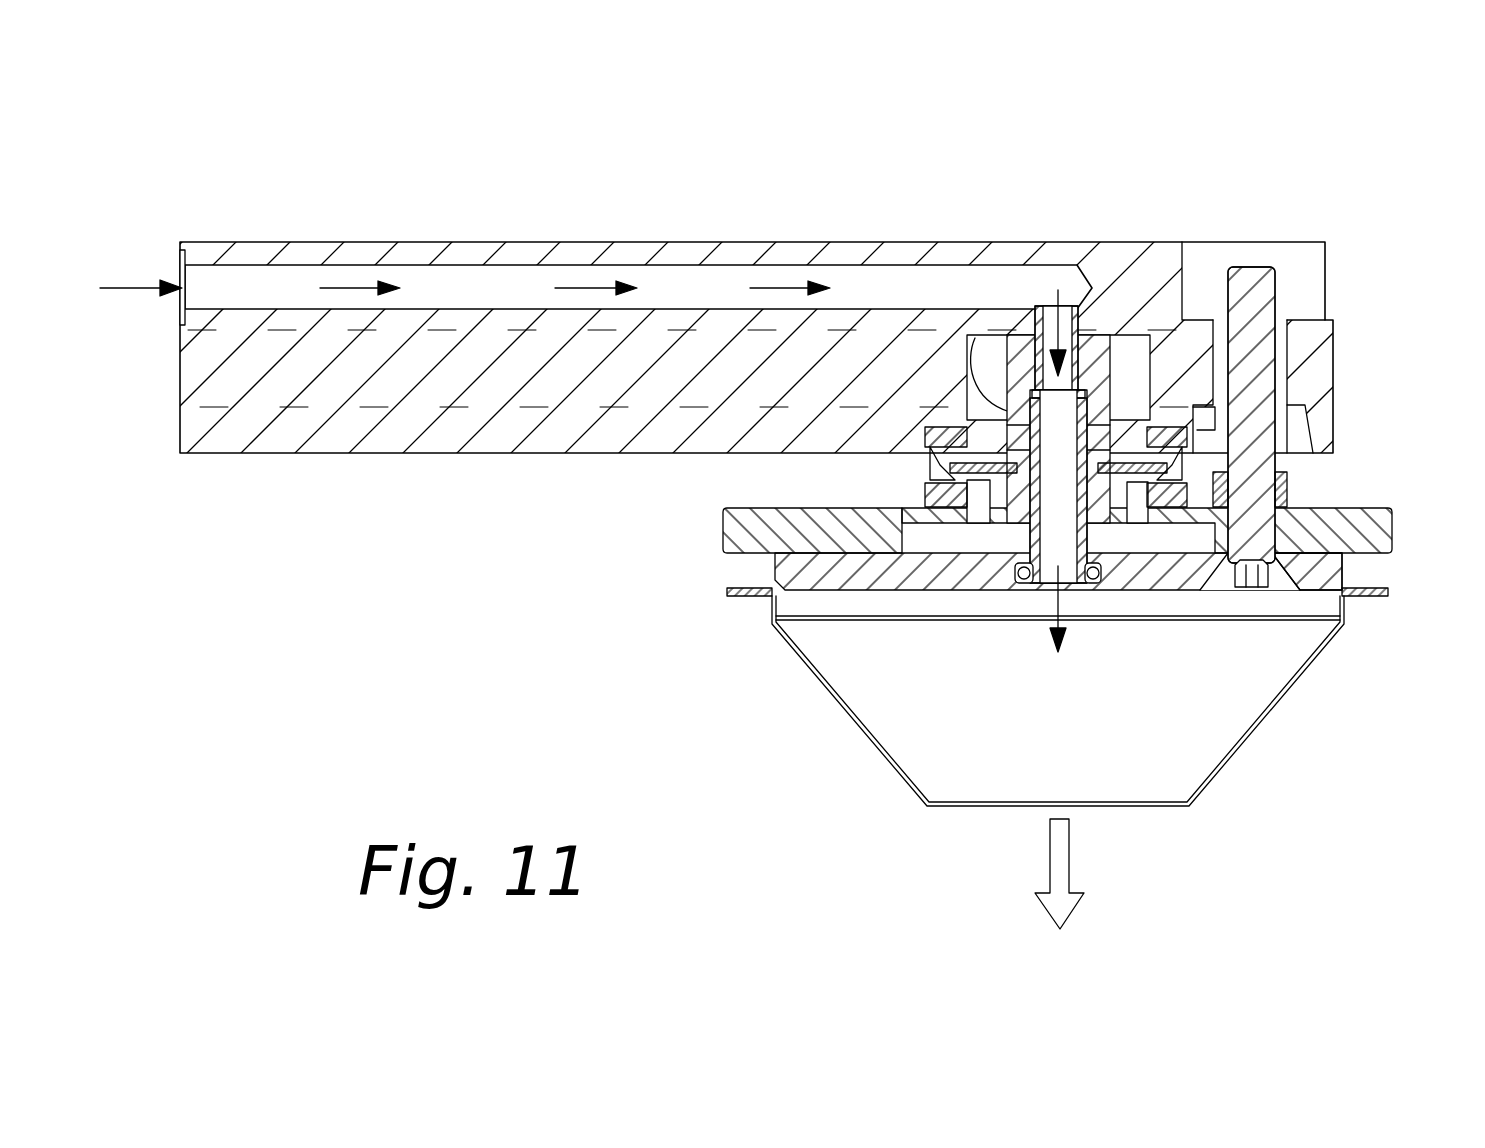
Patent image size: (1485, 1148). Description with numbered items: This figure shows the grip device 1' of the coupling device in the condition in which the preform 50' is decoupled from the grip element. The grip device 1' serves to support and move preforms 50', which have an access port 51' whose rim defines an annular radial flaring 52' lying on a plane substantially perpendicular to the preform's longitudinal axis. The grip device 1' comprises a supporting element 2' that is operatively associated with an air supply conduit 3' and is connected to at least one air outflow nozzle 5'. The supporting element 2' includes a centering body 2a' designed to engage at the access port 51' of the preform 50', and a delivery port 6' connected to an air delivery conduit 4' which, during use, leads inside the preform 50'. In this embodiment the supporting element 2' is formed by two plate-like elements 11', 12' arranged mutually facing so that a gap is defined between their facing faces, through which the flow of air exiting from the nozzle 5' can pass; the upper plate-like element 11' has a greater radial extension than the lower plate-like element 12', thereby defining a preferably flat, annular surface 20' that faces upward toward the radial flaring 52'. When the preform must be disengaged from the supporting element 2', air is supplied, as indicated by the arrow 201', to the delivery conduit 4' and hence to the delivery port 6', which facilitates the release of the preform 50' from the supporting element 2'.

The grip device 1' is at (1070, 120).
The arrow 201' is at (614, 543).
The air delivery conduit 4' is at (768, 344).
The air supply conduit 3' is at (742, 455).
The supporting element 2' is at (1015, 445).
The plate-like element 11' is at (766, 514).
The air outflow nozzle 5' is at (1166, 507).
The annular radial flaring 52' is at (1077, 618).
The surface 20' is at (1325, 463).
The plate-like element 12' is at (1329, 630).
The delivery port 6' is at (1074, 539).
The centering body 2a' is at (1058, 631).
The preform 50' is at (1058, 725).
The access port 51' is at (1040, 666).